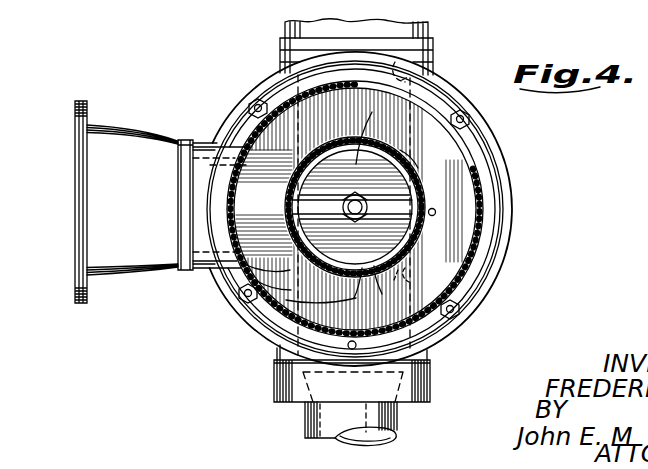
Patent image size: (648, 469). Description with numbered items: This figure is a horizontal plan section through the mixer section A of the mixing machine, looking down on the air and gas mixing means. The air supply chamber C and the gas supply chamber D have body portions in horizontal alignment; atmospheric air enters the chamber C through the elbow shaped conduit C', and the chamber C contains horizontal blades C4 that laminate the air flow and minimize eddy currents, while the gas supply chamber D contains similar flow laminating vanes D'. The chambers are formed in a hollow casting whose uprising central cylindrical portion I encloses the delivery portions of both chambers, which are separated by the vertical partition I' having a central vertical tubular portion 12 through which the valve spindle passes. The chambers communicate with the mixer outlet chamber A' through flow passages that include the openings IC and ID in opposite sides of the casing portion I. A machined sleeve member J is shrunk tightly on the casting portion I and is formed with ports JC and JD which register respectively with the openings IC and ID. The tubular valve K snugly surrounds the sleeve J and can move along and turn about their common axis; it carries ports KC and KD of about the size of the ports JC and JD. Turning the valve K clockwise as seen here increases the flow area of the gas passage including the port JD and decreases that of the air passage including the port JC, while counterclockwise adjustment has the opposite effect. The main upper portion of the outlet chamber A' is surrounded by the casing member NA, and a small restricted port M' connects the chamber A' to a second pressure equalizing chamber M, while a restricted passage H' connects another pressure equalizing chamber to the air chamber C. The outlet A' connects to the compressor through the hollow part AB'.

The mixer section A is at (370, 209).
The casing member NA is at (478, 245).
The second pressure equalizing chamber M is at (355, 250).
The tubular valve K is at (258, 148).
The port KD is at (310, 162).
The sleeve member J is at (254, 204).
The mixer outlet A' is at (167, 200).
The hollow part AB' is at (58, 202).
The top pipe E is at (298, 23).
The gas supply chamber D is at (371, 45).
The vanes D' is at (365, 125).
The vertical partition I' is at (384, 206).
The central vertical tubular portion 12 is at (294, 225).
The central cylindrical portion I is at (406, 216).
The restricted port M' is at (490, 186).
The port JD is at (403, 152).
The opening ID is at (411, 170).
The port KC is at (290, 245).
The port JC is at (286, 288).
The opening IC is at (300, 298).
The air supply chamber C is at (367, 215).
The horizontal blades C4 is at (372, 272).
The restricted passage H' is at (353, 371).
The elbow shaped conduit C' is at (373, 423).